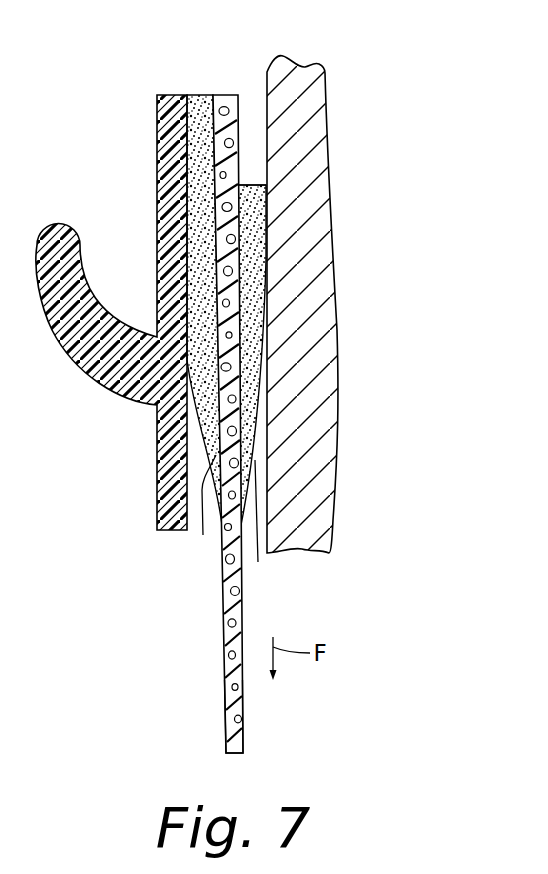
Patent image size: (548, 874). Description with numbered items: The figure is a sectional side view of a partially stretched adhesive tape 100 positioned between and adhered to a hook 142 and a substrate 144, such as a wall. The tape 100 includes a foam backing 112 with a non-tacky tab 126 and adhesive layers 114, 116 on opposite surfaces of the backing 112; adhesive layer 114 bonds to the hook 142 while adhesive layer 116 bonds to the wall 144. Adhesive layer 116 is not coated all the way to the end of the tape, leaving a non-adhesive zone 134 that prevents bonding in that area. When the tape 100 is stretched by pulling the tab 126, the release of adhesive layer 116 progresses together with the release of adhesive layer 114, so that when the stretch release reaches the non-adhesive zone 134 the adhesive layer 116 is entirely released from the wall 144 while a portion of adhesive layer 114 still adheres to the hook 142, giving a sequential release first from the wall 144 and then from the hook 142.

The adhesive tape 100 is at (264, 424).
The foam backing 112 is at (228, 288).
The adhesive layer 114 is at (203, 535).
The adhesive layer 116 is at (266, 390).
The non-tacky tab 126 is at (225, 714).
The non-adhesive zone 134 is at (240, 138).
The hook 142 is at (162, 476).
The substrate 144 is at (323, 380).